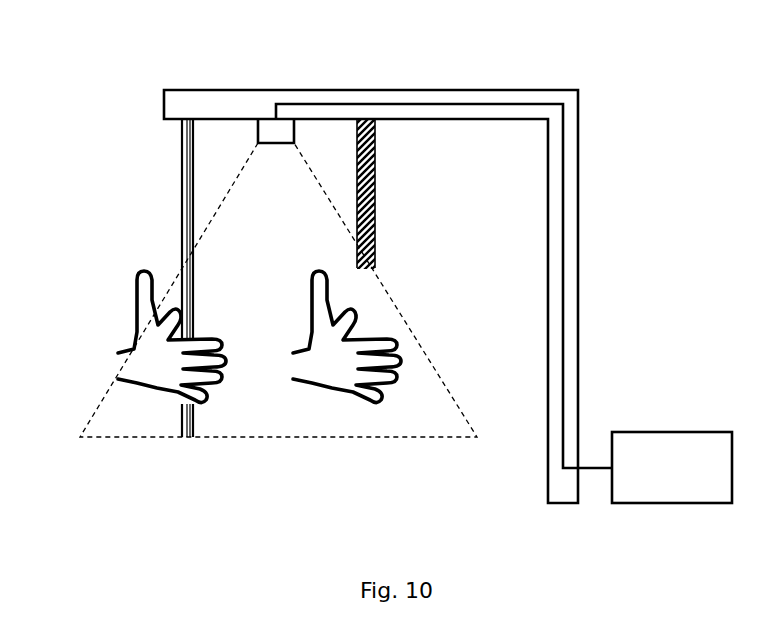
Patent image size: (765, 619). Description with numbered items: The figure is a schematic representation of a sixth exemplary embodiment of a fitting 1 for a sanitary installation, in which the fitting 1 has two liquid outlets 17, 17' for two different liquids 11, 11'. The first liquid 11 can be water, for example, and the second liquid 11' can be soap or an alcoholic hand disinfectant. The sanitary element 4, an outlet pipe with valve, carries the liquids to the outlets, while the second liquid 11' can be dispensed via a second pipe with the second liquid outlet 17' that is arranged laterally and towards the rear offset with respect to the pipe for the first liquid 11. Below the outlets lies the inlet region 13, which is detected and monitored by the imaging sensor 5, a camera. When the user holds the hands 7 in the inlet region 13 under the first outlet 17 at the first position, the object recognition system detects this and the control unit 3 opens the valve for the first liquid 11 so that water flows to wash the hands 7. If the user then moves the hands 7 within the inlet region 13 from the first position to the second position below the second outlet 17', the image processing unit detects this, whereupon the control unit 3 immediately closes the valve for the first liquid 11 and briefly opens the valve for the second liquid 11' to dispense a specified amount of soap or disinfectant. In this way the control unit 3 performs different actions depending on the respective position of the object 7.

The fitting 1 is at (111, 68).
The control unit 3 is at (677, 414).
The sanitary element 4 is at (376, 69).
The imaging sensor 5 is at (277, 160).
The object 7 is at (148, 412).
The first liquid 11 is at (133, 278).
The second liquid 11' is at (415, 195).
The inlet region 13 is at (450, 348).
The first liquid outlet 17 is at (133, 278).
The second liquid outlet 17' is at (415, 195).